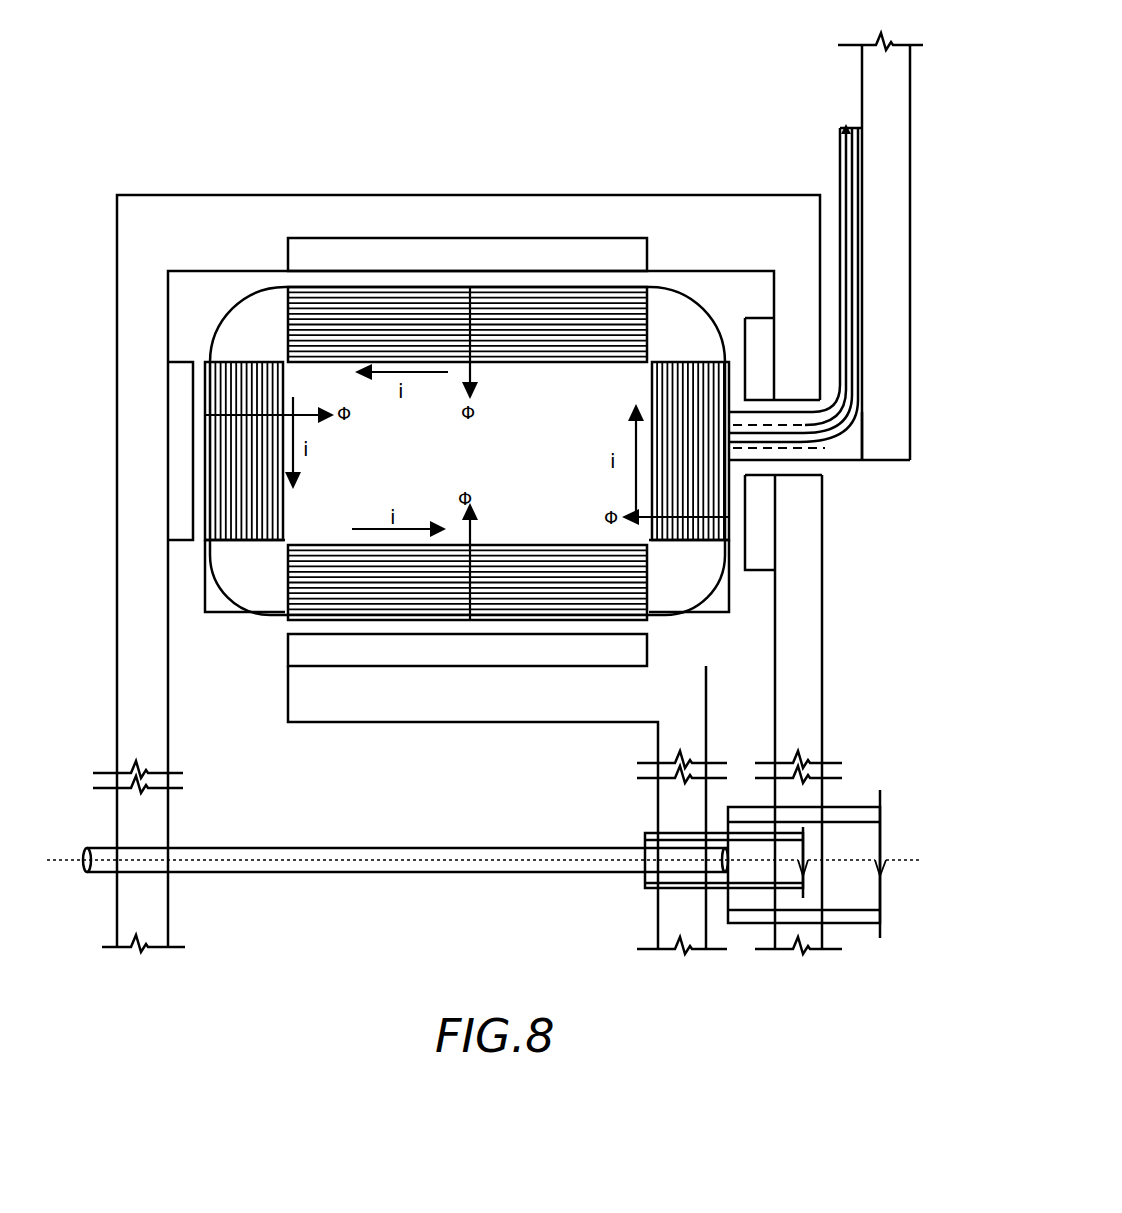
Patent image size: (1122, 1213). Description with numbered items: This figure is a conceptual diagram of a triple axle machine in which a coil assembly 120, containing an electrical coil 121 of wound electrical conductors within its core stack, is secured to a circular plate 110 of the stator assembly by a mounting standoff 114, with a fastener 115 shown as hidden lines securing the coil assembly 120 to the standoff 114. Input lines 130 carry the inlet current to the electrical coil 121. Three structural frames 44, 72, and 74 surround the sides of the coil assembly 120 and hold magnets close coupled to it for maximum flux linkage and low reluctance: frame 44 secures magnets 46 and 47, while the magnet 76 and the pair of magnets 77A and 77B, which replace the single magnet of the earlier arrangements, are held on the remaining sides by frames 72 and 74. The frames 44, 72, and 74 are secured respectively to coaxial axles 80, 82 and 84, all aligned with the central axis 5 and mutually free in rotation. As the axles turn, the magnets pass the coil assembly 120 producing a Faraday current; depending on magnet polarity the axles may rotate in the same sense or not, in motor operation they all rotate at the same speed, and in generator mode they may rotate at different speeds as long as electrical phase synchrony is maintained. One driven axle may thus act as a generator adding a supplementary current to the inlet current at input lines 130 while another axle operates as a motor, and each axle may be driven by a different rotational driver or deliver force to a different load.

The central axis 5 is at (378, 860).
The structural frame 44 is at (130, 708).
The magnet 46 is at (472, 250).
The magnet 47 is at (183, 534).
The structural frame 72 is at (418, 712).
The structural frame 74 is at (803, 680).
The magnet 76 is at (318, 652).
The magnet 77A is at (758, 330).
The magnet 77B is at (758, 572).
The axle 80 is at (232, 848).
The axle 82 is at (648, 870).
The axle 84 is at (842, 807).
The circular plate 110 is at (864, 67).
The mounting standoff 114 is at (832, 463).
The fastener 115 is at (872, 437).
The coil assembly 120 is at (393, 257).
The electrical coil 121 is at (322, 542).
The input lines 130 is at (840, 144).